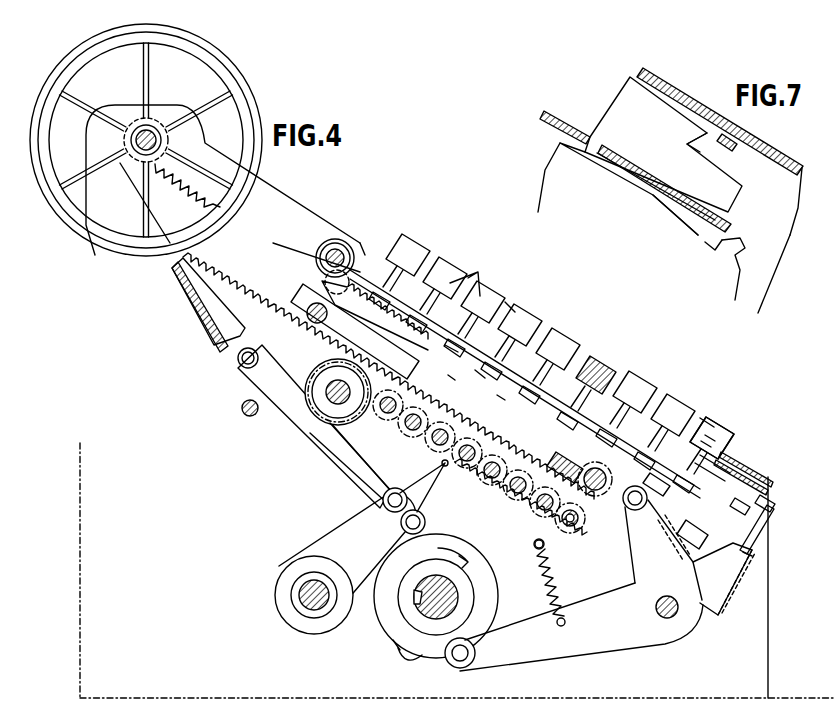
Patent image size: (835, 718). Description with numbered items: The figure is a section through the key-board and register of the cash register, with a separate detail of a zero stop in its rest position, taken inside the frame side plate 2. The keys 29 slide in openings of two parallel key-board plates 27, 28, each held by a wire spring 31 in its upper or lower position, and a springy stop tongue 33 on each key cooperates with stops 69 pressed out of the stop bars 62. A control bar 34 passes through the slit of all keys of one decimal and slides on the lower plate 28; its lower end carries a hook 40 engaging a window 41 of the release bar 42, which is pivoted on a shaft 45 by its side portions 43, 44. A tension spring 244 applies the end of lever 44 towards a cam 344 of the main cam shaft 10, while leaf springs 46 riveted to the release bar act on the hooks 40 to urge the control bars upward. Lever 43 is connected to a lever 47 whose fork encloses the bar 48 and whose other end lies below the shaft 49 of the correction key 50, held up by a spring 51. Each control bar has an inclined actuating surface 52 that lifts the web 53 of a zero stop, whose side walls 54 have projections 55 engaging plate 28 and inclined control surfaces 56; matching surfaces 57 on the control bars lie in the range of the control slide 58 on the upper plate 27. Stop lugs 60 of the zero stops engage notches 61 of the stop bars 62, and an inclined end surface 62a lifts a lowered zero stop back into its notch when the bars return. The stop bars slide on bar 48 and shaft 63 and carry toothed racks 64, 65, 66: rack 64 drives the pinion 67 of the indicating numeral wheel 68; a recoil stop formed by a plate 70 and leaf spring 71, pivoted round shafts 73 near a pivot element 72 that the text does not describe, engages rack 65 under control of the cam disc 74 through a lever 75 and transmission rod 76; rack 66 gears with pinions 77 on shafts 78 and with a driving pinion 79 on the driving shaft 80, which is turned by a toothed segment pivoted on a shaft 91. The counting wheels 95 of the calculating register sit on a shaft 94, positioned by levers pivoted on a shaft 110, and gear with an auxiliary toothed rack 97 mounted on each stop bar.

In FIG. 4, the side plate 2 is at (80, 445).
In FIG. 4, the main cam shaft 10 is at (430, 620).
In FIG. 4, the upper key-board plate 27 is at (396, 242).
In FIG. 7, the upper key-board plate 27 is at (697, 107).
In FIG. 4, the lower key-board plate 28 is at (475, 370).
In FIG. 7, the lower key-board plate 28 is at (557, 121).
In FIG. 4, the key 29 is at (485, 268).
In FIG. 4, the wire spring 31 is at (445, 345).
In FIG. 4, the stop tongue 33 is at (448, 375).
In FIG. 4, the control bar 34 is at (505, 302).
In FIG. 4, the hook 40 is at (770, 500).
In FIG. 4, the window 41 is at (745, 505).
In FIG. 4, the release bar 42 is at (752, 556).
In FIG. 4, the side portion (lever) 43 is at (627, 558).
In FIG. 4, the side portion (lever) 44 is at (610, 648).
In FIG. 4, the shaft 45 is at (667, 620).
In FIG. 4, the leaf spring 46 is at (752, 556).
In FIG. 4, the lever 47 is at (603, 495).
In FIG. 4, the bar 48 is at (578, 528).
In FIG. 4, the shaft of correction key 49 is at (668, 550).
In FIG. 4, the correction key 50 is at (720, 425).
In FIG. 4, the spring 51 is at (706, 435).
In FIG. 4, the inclined actuating surface 52 is at (728, 462).
In FIG. 4, the web of zero stop 53 is at (742, 470).
In FIG. 7, the web of zero stop 53 is at (730, 222).
In FIG. 4, the side wall of zero stop 54 is at (665, 405).
In FIG. 7, the side wall of zero stop 54 is at (620, 110).
In FIG. 7, the projection 55 is at (585, 154).
In FIG. 7, the inclined control surface 56 is at (694, 138).
In FIG. 4, the inclined control surface 57 is at (712, 530).
In FIG. 4, the control slide 58 is at (772, 478).
In FIG. 7, the control slide 58 is at (798, 180).
In FIG. 7, the stop lug 60 is at (712, 250).
In FIG. 4, the notch 61 is at (735, 572).
In FIG. 7, the notch 61 is at (740, 250).
In FIG. 4, the stop bar 62 is at (318, 232).
In FIG. 7, the stop bar 62 is at (760, 277).
In FIG. 7, the inclined end surface 62a is at (702, 238).
In FIG. 4, the shaft 63 is at (310, 305).
In FIG. 4, the toothed rack 64 is at (172, 192).
In FIG. 4, the toothed rack 65 is at (205, 262).
In FIG. 4, the toothed rack 66 is at (390, 422).
In FIG. 4, the pinion 67 is at (126, 143).
In FIG. 4, the indicating numeral wheel 68 is at (232, 68).
In FIG. 4, the stop 69 is at (556, 462).
In FIG. 4, the plate 70 is at (183, 290).
In FIG. 4, the leaf spring 71 is at (186, 316).
In FIG. 4, the pivot 72 is at (236, 363).
In FIG. 4, the shaft 73 is at (312, 374).
In FIG. 4, the cam disc 74 is at (392, 608).
In FIG. 4, the lever 75 is at (335, 542).
In FIG. 4, the transmission rod 76 is at (345, 462).
In FIG. 4, the pinion 77 is at (437, 449).
In FIG. 4, the shaft 78 is at (533, 546).
In FIG. 4, the driving pinion 79 is at (320, 426).
In FIG. 4, the driving shaft 80 is at (305, 412).
In FIG. 4, the shaft 91 is at (298, 598).
In FIG. 4, the shaft 94 is at (330, 240).
In FIG. 4, the counting wheel 95 is at (338, 238).
In FIG. 4, the auxiliary toothed rack 97 is at (325, 282).
In FIG. 4, the shaft 110 is at (242, 409).
In FIG. 4, the tension spring 244 is at (551, 600).
In FIG. 4, the cam 344 is at (393, 640).